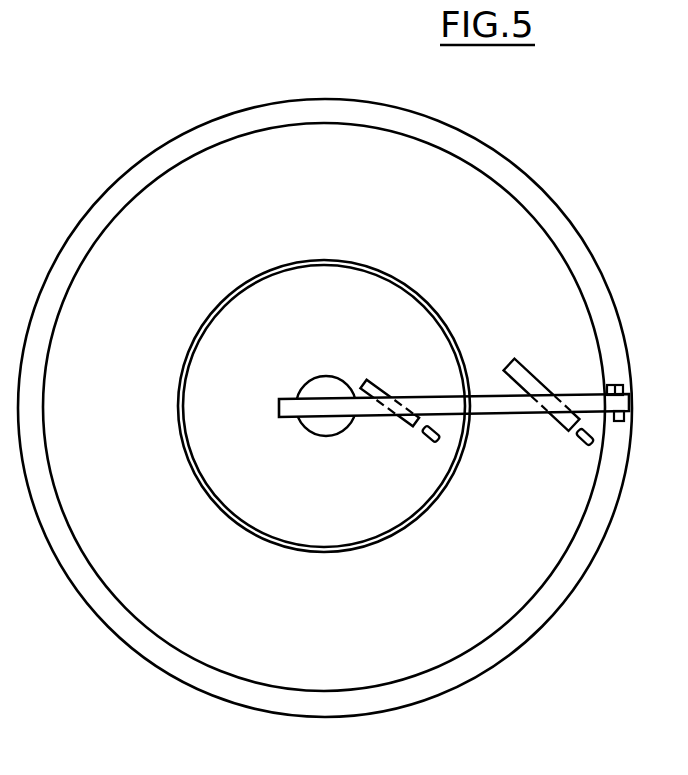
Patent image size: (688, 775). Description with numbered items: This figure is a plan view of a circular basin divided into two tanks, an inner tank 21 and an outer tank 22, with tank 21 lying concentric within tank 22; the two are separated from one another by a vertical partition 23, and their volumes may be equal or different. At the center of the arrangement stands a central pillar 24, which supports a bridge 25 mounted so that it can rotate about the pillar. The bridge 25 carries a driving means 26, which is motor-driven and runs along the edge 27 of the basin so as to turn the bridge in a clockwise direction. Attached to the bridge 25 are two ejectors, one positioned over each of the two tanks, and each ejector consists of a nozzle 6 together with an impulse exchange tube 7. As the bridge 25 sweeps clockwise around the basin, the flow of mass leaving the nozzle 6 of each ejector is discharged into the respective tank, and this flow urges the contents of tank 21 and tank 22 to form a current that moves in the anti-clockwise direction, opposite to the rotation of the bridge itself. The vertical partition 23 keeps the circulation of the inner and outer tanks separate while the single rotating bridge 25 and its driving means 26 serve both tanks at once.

The nozzle 6 is at (432, 438).
The impulse exchange tube 7 is at (374, 384).
The tank 21 is at (367, 295).
The tank 22 is at (497, 202).
The vertical partition 23 is at (227, 303).
The central pillar 24 is at (310, 387).
The bridge 25 is at (507, 405).
The driving means 26 is at (612, 386).
The edge of the basin 27 is at (522, 632).